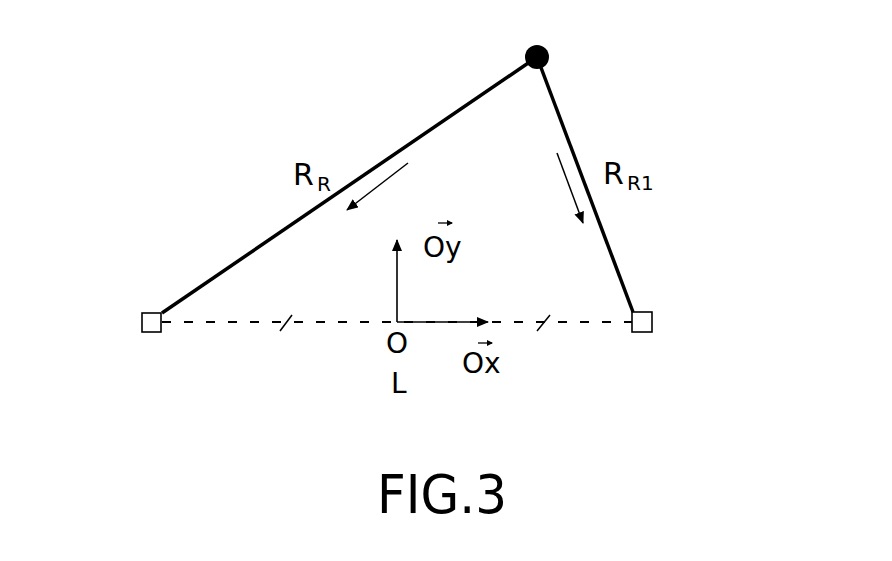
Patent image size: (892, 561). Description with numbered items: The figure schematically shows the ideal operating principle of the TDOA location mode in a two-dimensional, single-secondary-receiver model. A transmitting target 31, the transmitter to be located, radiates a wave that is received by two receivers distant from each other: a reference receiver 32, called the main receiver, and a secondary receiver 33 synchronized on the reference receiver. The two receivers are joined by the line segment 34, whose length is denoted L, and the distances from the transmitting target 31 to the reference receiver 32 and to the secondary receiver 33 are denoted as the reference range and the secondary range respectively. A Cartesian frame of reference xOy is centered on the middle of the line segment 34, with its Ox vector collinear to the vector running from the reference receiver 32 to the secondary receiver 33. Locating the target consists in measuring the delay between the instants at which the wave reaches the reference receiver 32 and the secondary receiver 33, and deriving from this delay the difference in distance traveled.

The transmitting target 31 is at (551, 54).
The reference receiver 32 is at (142, 315).
The secondary receiver 33 is at (652, 325).
The line segment [Rx, Rx1] 34 is at (312, 327).